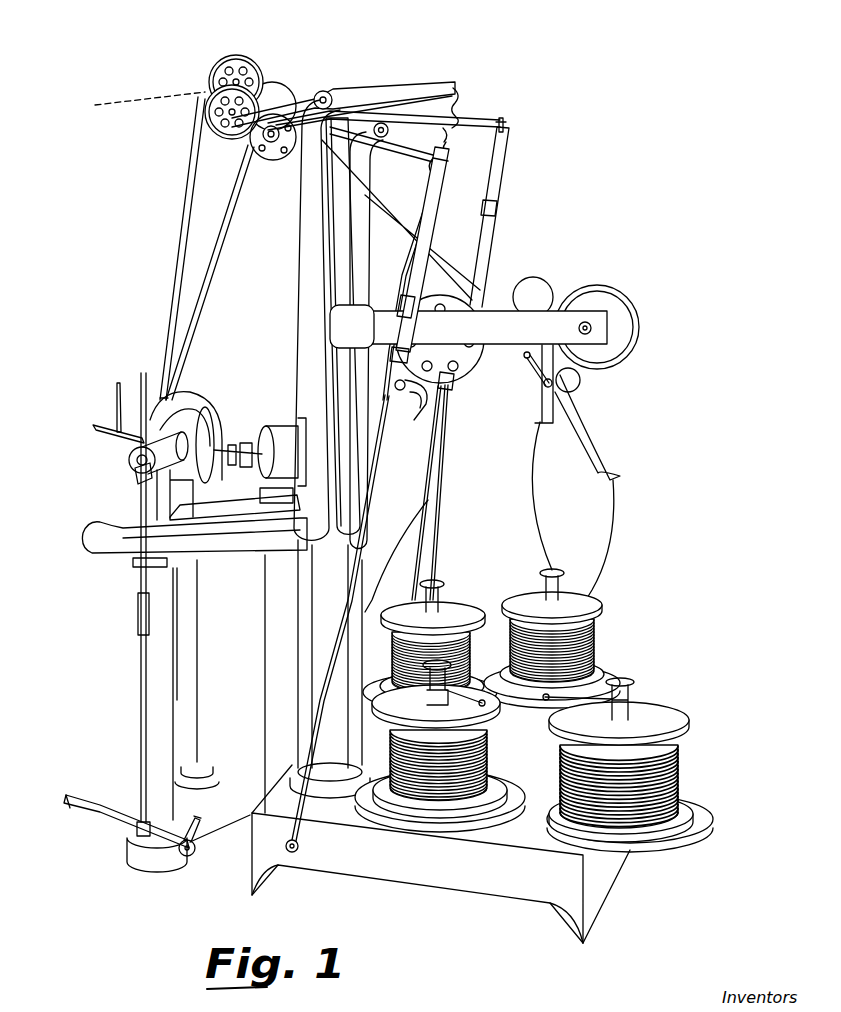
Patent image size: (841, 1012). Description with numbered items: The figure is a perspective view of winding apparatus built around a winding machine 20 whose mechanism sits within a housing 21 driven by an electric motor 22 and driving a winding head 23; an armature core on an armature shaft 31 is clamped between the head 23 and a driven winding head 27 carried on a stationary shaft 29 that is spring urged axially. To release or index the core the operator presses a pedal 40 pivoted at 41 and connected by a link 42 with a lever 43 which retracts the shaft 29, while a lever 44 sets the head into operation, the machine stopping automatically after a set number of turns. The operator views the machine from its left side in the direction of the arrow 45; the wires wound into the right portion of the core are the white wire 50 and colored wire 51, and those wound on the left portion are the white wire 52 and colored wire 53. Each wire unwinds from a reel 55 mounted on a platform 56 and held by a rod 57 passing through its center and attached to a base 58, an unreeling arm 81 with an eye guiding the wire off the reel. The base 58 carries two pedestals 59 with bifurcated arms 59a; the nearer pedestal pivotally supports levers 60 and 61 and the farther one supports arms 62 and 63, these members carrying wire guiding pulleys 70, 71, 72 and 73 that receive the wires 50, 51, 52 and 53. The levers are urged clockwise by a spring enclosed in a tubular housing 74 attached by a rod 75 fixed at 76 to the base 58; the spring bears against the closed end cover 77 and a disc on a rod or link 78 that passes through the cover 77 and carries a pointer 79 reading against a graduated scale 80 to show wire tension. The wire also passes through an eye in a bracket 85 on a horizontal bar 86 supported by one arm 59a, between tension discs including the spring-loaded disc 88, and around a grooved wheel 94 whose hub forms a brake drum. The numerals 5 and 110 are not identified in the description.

The machine 5 is at (81, 656).
The winding machine 20 is at (70, 478).
The housing 21 is at (206, 410).
The electric motor 22 is at (272, 420).
The winding head 23 is at (184, 400).
The driven winding head 27 is at (160, 396).
The stationary shaft 29 is at (137, 465).
The armature shaft 31 is at (216, 440).
The pedal 40 is at (72, 810).
The pedal pivot 41 is at (185, 857).
The link 42 is at (138, 680).
The lever 43 is at (136, 480).
The lever 44 is at (117, 380).
The arrow 45 is at (58, 415).
The wire 50 is at (185, 186).
The wire 51 is at (188, 216).
The wire 52 is at (229, 202).
The wire 53 is at (226, 182).
The reel 55 is at (655, 700).
The platform 56 is at (702, 808).
The rod 57 is at (632, 680).
The base 58 is at (517, 892).
The pedestal 59 is at (346, 592).
The bifurcated arms 59a is at (320, 254).
The lever 60 is at (300, 88).
The lever 61 is at (325, 90).
The arm 62 is at (277, 145).
The arm 63 is at (420, 152).
The wire guiding pulley 70 is at (226, 60).
The wire guiding pulley 71 is at (205, 92).
The wire guiding pulley 72 is at (262, 156).
The wire guiding pulley 73 is at (272, 82).
The tubular housing 74 is at (430, 226).
The rod 75 is at (381, 425).
The fixing point 76 is at (292, 858).
The closed end cover 77 is at (441, 160).
The rod or link 78 is at (445, 146).
The pointer 79 is at (404, 333).
The graduated scale 80 is at (412, 300).
The unreeling arm 81 is at (428, 694).
The bracket 85 is at (416, 398).
The horizontal bar 86 is at (548, 300).
The tension disc 88 is at (445, 398).
The grooved wheel 94 is at (470, 362).
The bar 110 is at (95, 428).